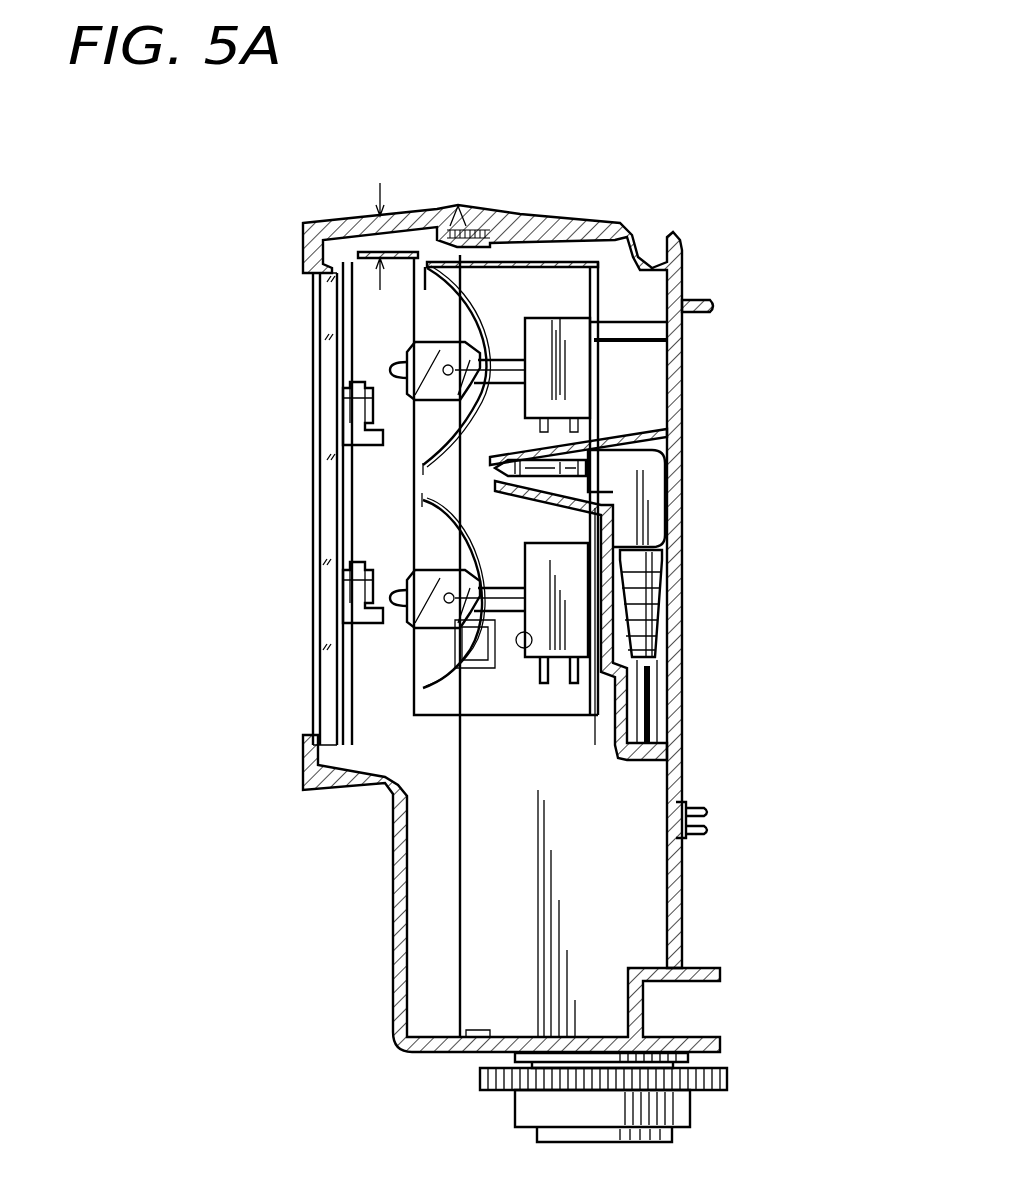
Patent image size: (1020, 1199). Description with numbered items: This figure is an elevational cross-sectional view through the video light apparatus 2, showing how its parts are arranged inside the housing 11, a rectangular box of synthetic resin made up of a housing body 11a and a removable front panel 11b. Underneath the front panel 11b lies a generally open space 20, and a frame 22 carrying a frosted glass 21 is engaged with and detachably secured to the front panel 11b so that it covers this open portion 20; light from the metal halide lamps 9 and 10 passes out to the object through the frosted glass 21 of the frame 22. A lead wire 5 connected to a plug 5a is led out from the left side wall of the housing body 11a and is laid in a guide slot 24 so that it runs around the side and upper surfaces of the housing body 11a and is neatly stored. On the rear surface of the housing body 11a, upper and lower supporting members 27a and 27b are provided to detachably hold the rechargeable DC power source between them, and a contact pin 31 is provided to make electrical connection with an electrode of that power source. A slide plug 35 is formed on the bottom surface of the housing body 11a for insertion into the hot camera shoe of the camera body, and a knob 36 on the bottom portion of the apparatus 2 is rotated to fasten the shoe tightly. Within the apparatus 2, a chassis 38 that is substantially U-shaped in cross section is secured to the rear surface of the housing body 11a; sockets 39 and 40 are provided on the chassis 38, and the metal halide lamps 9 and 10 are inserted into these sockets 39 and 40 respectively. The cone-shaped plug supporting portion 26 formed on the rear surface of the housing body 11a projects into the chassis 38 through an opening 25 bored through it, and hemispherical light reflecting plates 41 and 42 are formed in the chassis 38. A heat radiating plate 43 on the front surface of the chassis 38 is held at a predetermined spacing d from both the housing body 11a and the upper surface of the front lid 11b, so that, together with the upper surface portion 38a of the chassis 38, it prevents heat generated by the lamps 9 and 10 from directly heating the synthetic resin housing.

The video light apparatus 2 is at (551, 130).
The lead wire 5 is at (640, 710).
The plug 5a is at (678, 575).
The metal halide lamp 9 is at (598, 314).
The metal halide lamp 10 is at (620, 500).
The housing 11 is at (393, 924).
The housing body 11a is at (680, 396).
The front panel 11b is at (412, 212).
The open space 20 is at (372, 755).
The frosted glass 21 is at (326, 472).
The frame 22 is at (306, 244).
The guide slot 24 is at (650, 235).
The opening 25 is at (530, 470).
The plug supporting portion 26 is at (478, 543).
The supporting member 27a is at (718, 306).
The supporting member 27b is at (714, 962).
The contact pin 31 is at (710, 818).
The slide plug 35 is at (640, 1144).
The knob 36 is at (728, 1080).
The chassis 38 is at (570, 722).
The upper surface portion of the chassis 38a is at (574, 262).
The socket 39 is at (580, 378).
The socket 40 is at (578, 668).
The light reflecting plate 41 is at (482, 300).
The light reflecting plate 42 is at (445, 690).
The heat radiating plate 43 is at (405, 296).
The predetermined spacing d is at (374, 238).